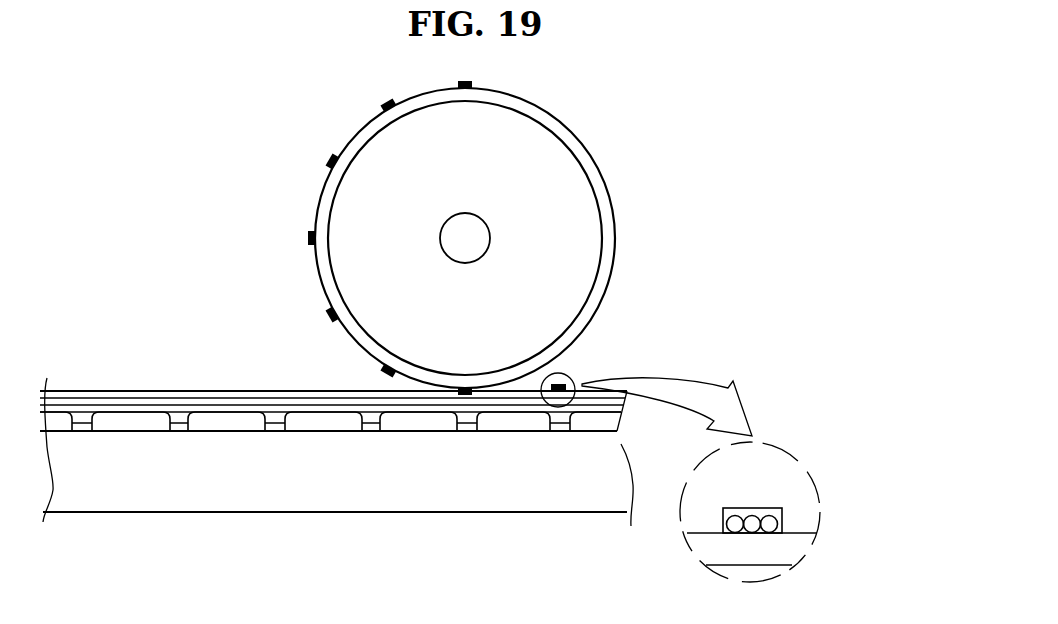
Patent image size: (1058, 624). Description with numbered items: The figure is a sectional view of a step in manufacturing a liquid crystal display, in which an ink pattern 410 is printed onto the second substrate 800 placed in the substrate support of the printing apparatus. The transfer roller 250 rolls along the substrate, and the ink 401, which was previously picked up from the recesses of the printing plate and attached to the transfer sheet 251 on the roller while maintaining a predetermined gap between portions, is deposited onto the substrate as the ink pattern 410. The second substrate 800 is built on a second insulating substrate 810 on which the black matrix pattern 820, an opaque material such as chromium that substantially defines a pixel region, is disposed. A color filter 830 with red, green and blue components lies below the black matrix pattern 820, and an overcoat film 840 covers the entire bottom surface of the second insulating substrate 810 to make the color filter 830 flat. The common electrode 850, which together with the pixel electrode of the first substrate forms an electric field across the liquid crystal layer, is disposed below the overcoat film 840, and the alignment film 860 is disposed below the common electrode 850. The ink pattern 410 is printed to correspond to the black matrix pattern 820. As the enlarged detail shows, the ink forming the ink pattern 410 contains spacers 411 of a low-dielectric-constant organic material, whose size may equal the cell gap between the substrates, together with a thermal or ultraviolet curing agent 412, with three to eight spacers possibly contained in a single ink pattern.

The transfer roller 250 is at (555, 233).
The transfer sheet 251 is at (572, 140).
The ink 401 is at (386, 106).
The ink pattern 410 is at (565, 383).
The spacer 411 is at (782, 522).
The curing agent 412 is at (782, 508).
The second substrate 800 is at (343, 493).
The second insulating substrate 810 is at (255, 482).
The black matrix pattern 820 is at (370, 431).
The color filter 830 is at (323, 427).
The overcoat film 840 is at (463, 431).
The common electrode 850 is at (505, 405).
The alignment film 860 is at (137, 395).